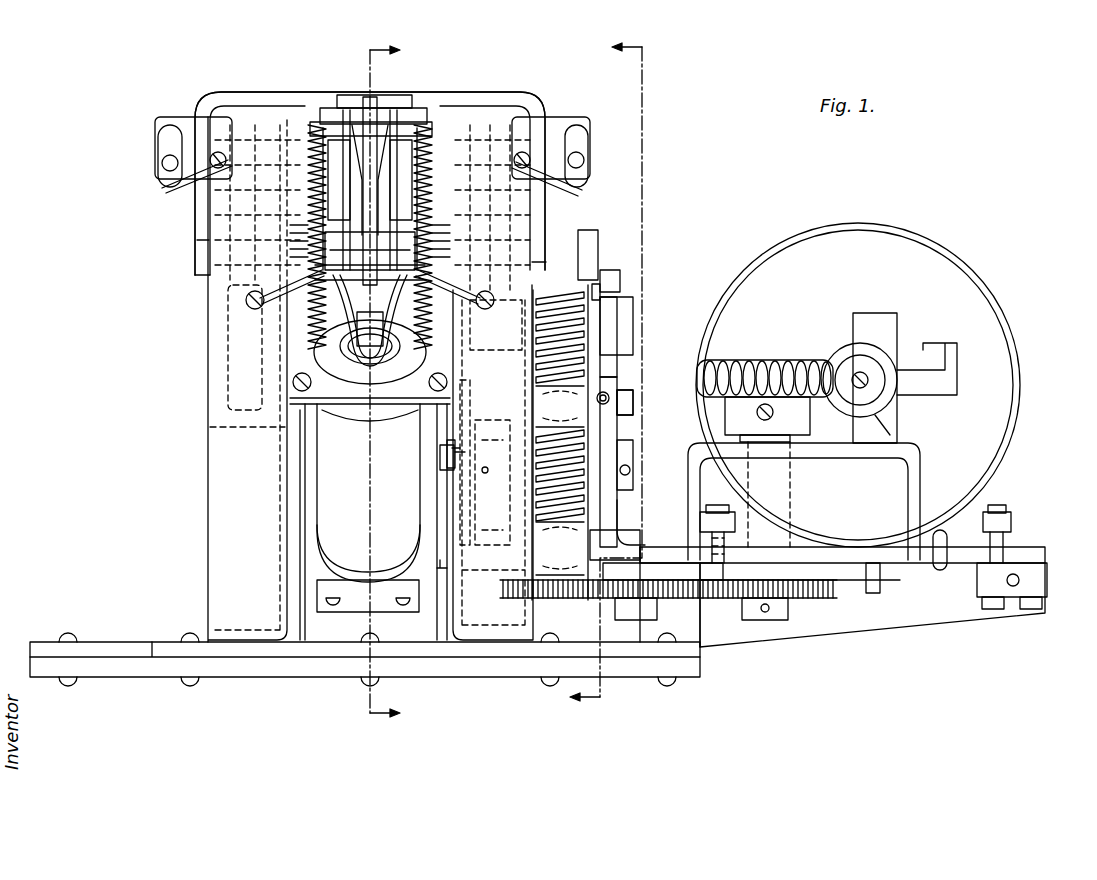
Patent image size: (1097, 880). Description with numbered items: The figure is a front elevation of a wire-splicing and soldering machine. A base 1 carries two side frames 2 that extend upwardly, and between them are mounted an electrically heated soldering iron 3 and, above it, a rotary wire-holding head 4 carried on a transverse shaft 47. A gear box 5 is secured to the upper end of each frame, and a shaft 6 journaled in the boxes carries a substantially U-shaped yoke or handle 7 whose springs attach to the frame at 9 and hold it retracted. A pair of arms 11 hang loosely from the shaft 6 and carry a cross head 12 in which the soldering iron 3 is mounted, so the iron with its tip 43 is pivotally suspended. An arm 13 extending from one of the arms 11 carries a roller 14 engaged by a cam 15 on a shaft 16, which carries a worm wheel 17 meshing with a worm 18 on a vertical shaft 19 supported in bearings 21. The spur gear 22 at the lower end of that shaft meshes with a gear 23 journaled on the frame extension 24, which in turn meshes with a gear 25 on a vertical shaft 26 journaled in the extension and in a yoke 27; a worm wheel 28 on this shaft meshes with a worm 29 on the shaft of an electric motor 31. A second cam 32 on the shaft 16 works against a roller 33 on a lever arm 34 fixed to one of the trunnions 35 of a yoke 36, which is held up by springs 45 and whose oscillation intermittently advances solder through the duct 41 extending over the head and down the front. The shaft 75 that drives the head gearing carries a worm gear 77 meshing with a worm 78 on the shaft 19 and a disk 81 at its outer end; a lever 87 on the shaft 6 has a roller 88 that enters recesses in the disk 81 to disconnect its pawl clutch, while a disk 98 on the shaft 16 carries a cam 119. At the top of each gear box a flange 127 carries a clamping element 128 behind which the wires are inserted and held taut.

The base 1 is at (278, 680).
The side frames 2 is at (207, 547).
The soldering iron 3 is at (330, 466).
The rotary wire-holding head 4 is at (345, 100).
The gear box 5 is at (188, 292).
The shaft 6 is at (197, 250).
The U-shaped yoke or handle 7 is at (248, 100).
The spring attachment point 9 is at (400, 72).
The arms 11 is at (330, 490).
The cross head 12 is at (330, 578).
The arm 13 is at (438, 440).
The roller 14 is at (440, 470).
The cam 15 is at (442, 580).
The shaft 16 is at (460, 478).
The worm wheel 17 is at (600, 435).
The worm 18 is at (590, 465).
The vertical shaft 19 is at (586, 400).
The bearings 21 is at (560, 442).
The spur gear 22 is at (560, 605).
The gear 23 is at (612, 604).
The frame extension 24 is at (888, 590).
The gear 25 is at (800, 604).
The vertical shaft 26 is at (780, 480).
The yoke 27 is at (790, 455).
The worm wheel 28 is at (725, 362).
The worm 29 is at (840, 355).
The electric motor 31 is at (948, 252).
The cam 32 is at (445, 458).
The roller 33 is at (490, 535).
The lever arm 34 is at (500, 410).
The trunnions 35 is at (470, 380).
The yoke 36 is at (395, 398).
The duct 41 is at (372, 110).
The tip 43 is at (370, 245).
The springs 45 is at (360, 362).
The transverse shaft 47 is at (575, 182).
The shaft 75 is at (290, 340).
The worm gear 77 is at (592, 375).
The worm 78 is at (632, 305).
The disk 81 is at (612, 330).
The lever 87 is at (600, 248).
The roller 88 is at (610, 278).
The disk 98 is at (632, 474).
The cam 119 is at (630, 538).
The flange 127 is at (175, 122).
The clamping element 128 is at (160, 149).